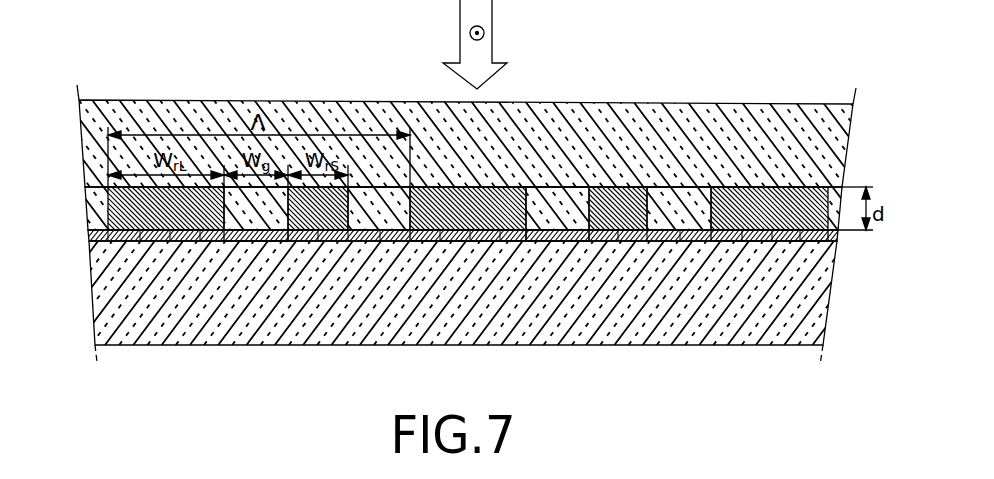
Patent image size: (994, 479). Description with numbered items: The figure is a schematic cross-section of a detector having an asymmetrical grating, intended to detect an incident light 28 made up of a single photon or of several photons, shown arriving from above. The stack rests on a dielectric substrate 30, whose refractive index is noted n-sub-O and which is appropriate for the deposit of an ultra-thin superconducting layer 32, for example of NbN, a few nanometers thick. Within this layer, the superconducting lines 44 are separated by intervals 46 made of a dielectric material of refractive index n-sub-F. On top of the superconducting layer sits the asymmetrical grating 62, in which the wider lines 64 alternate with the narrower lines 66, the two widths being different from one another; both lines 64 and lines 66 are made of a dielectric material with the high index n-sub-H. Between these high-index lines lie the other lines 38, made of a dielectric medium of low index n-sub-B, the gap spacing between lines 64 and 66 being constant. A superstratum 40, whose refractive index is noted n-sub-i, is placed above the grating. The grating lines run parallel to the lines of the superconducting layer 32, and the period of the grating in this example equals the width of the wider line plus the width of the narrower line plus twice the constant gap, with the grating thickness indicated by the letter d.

The incident light 28 is at (457, 6).
The dielectric substrate 30 is at (97, 292).
The ultra-thin superconducting layer 32 is at (467, 235).
The lines of low-index dielectric medium 38 is at (245, 217).
The superstratum 40 is at (80, 133).
The superconducting lines 44 is at (570, 238).
The intervals 46 is at (737, 238).
The asymmetrical grating 62 is at (468, 223).
The lines of width w_rL 64 is at (140, 216).
The lines of width w_rS 66 is at (310, 217).